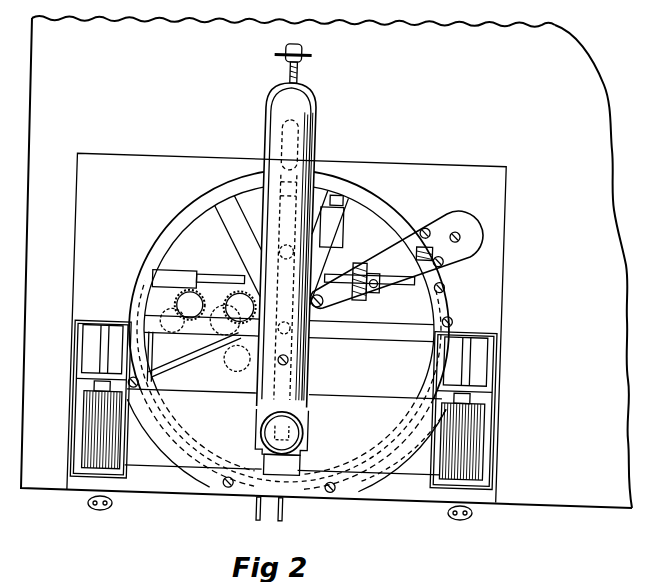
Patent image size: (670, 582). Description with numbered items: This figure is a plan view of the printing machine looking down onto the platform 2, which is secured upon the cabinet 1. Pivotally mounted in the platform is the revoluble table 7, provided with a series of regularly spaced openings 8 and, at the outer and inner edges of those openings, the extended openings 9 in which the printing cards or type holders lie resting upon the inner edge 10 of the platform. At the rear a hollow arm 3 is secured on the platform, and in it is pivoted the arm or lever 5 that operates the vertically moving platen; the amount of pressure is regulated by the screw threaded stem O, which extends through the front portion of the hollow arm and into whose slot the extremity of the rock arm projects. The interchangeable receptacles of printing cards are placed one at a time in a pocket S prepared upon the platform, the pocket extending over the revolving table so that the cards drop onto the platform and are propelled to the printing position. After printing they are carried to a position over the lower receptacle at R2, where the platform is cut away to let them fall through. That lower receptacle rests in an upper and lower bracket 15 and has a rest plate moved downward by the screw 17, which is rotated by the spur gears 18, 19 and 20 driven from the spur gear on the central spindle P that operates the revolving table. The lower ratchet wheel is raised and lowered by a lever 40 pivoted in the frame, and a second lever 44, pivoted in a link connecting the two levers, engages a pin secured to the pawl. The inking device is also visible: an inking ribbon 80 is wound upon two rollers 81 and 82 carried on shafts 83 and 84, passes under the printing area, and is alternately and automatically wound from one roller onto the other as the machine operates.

The cabinet 1 is at (638, 309).
The platform 2 is at (484, 229).
The hollow arm 3 is at (298, 140).
The arm or lever 5 is at (291, 481).
The revoluble table 7 is at (208, 206).
The openings 8 is at (195, 233).
The extended openings 9 is at (161, 251).
The inner edge of the platform 10 is at (411, 366).
The upper and lower bracket 15 is at (199, 355).
The screw 17 is at (147, 294).
The spur gear 18 is at (175, 311).
The spur gear 19 is at (195, 296).
The spur gear 20 is at (233, 304).
The lever 40 is at (262, 519).
The second lever 44 is at (289, 520).
The inking ribbon 80 is at (404, 472).
The roller 81 is at (99, 389).
The roller 82 is at (462, 390).
The shaft 83 is at (471, 349).
The shaft 84 is at (100, 351).
The screw threaded stem O is at (282, 452).
The central spindle P is at (280, 464).
The pocket S is at (436, 213).
The lower receptacle position R2 is at (173, 360).